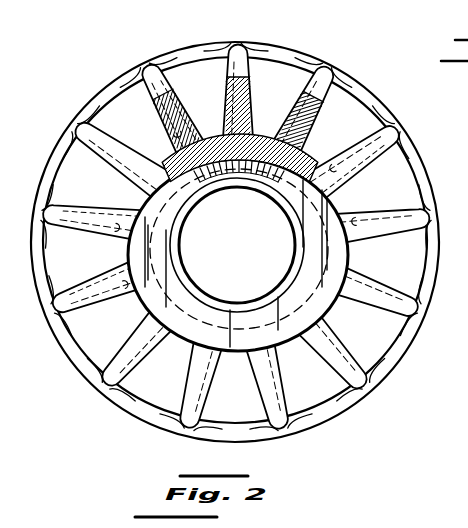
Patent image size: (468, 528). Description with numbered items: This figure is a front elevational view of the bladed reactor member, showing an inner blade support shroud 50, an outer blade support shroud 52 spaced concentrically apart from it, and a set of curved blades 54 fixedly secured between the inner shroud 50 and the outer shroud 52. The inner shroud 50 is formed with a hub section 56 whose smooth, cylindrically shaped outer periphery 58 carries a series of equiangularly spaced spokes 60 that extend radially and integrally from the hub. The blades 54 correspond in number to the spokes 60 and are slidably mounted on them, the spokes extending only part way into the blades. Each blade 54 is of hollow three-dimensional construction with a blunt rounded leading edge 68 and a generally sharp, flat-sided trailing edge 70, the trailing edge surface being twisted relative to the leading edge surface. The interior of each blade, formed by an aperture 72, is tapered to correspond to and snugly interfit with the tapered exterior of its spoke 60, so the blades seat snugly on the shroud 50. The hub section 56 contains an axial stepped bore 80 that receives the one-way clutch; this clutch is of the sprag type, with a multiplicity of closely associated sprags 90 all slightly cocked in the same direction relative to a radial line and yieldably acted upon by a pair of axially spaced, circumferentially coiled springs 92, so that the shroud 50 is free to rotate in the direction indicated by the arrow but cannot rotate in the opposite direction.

The inner blade support shroud 50 is at (263, 140).
The outer blade support shroud 52 is at (290, 44).
The curved blades 54 is at (190, 62).
The hub section 56 is at (243, 175).
The outer periphery 58 is at (352, 254).
The spokes 60 is at (181, 117).
The leading edge 68 is at (146, 63).
The trailing edge 70 is at (212, 62).
The aperture 72 is at (178, 100).
The axial stepped bore 80 is at (248, 265).
The sprags 90 is at (199, 154).
The circumferentially coiled springs 92 is at (158, 213).